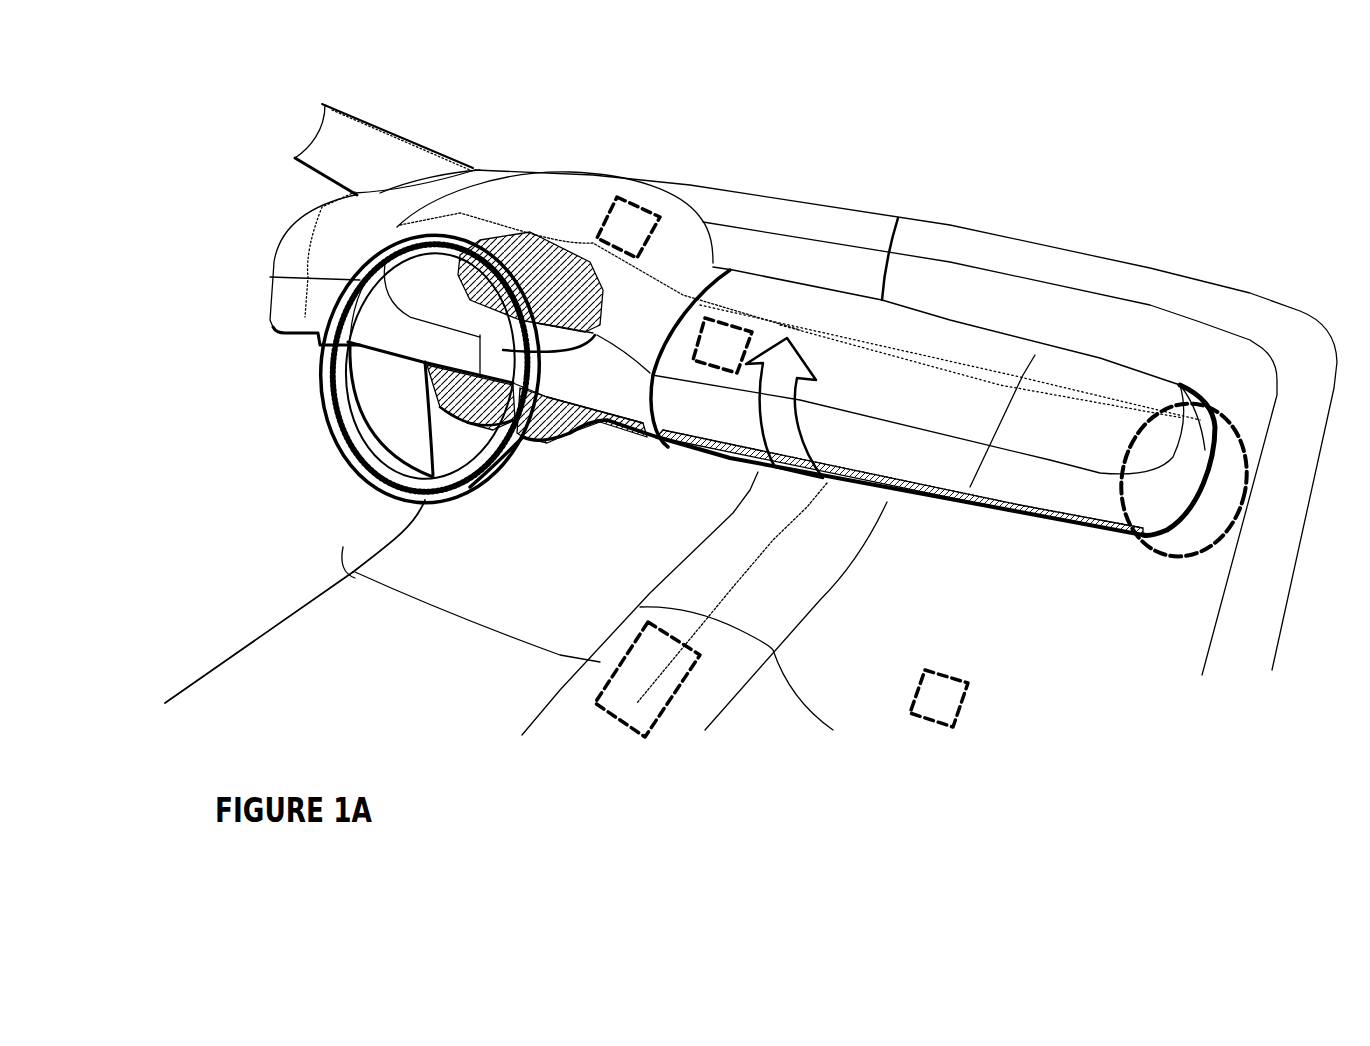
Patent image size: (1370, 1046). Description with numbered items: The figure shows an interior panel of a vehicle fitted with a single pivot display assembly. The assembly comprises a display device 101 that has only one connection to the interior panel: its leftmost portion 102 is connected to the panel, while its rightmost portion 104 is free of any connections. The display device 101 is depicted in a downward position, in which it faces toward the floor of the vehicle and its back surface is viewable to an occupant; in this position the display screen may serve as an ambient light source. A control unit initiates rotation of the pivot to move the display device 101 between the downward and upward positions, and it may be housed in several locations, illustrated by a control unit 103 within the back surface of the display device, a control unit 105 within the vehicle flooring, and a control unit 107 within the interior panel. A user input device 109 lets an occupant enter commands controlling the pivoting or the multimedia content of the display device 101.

The display device 101 is at (955, 362).
The leftmost portion 102 is at (710, 268).
The control unit 103 is at (705, 332).
The rightmost portion 104 is at (1148, 540).
The control unit 105 is at (962, 700).
The control unit 107 is at (628, 200).
The user input device 109 is at (623, 658).